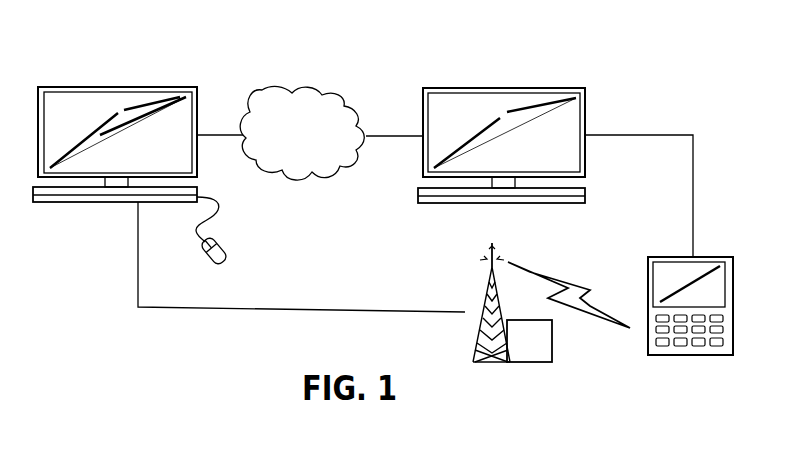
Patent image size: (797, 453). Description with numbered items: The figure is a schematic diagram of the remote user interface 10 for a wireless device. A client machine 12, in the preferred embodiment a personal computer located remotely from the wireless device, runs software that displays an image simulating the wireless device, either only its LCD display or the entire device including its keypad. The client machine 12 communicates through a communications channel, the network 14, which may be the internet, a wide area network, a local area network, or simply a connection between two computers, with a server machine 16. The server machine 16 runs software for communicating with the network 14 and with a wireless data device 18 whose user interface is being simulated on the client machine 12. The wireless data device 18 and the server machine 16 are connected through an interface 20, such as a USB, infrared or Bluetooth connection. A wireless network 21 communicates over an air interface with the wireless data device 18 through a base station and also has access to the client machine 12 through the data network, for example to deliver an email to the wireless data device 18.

The remote user interface 10 is at (705, 96).
The client machine 12 is at (133, 87).
The network 14 is at (308, 87).
The server machine 16 is at (510, 88).
The wireless data device 18 is at (712, 256).
The interface 20 is at (633, 135).
The wireless network 21 is at (552, 344).